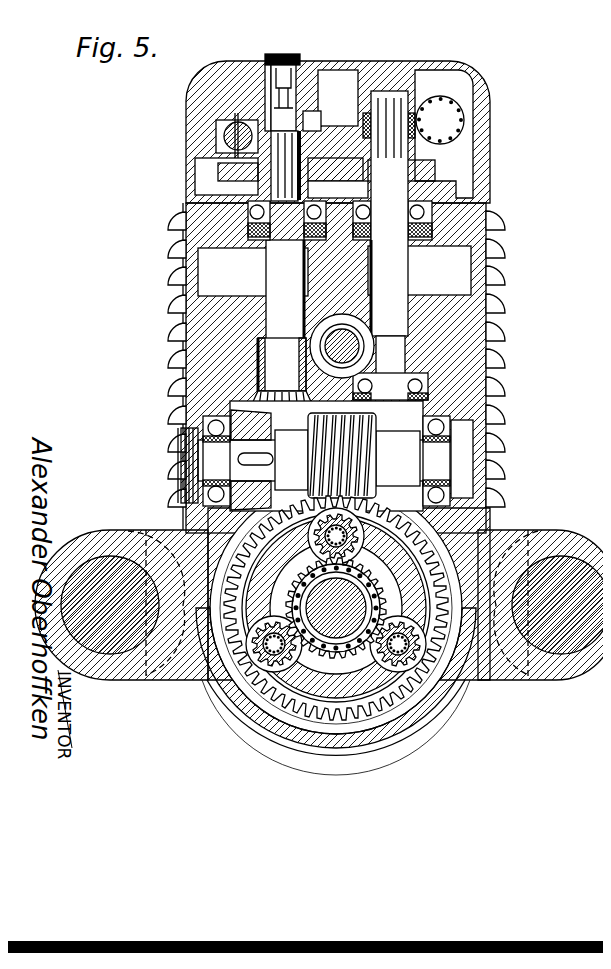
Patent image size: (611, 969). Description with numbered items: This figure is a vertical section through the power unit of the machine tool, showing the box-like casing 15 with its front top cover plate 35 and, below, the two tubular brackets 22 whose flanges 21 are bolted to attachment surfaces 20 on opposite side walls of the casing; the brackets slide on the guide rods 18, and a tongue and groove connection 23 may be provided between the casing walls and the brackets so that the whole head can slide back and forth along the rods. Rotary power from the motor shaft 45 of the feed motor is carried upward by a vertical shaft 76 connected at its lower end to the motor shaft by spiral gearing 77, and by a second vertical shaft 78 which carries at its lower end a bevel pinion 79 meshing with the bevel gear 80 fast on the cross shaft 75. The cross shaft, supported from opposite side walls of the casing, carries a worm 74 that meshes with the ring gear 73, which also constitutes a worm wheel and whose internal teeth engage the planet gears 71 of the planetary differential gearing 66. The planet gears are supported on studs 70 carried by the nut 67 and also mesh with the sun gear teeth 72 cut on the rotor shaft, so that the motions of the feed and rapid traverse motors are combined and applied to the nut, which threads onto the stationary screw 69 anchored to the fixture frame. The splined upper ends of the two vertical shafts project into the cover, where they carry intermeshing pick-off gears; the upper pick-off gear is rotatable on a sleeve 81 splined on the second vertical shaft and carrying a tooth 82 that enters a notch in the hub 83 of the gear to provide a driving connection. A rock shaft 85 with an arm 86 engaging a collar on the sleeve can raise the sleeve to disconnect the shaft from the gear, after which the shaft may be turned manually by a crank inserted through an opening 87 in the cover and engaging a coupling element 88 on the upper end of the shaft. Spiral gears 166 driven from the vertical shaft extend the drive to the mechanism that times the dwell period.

The casing 15 is at (178, 318).
The rods 18 is at (103, 548).
The attachment surfaces 20 is at (143, 563).
The flanges 21 is at (135, 527).
The tubular brackets 22 is at (96, 525).
The tongue and groove connection 23 is at (456, 612).
The front top cover plate 35 is at (482, 134).
The motor shaft 45 is at (339, 346).
The differential gearing 66 is at (431, 553).
The nut 67 is at (336, 608).
The screw 69 is at (336, 608).
The studs 70 is at (240, 655).
The planet gears 71 is at (336, 593).
The sun gear teeth 72 is at (274, 565).
The ring gear 73 is at (378, 512).
The worm 74 is at (366, 426).
The cross shaft 75 is at (393, 432).
The vertical shaft 76 is at (398, 272).
The spiral gearing 77 is at (354, 326).
The second vertical shaft 78 is at (296, 281).
The bevel pinion 79 is at (420, 161).
The bevel gear 80 is at (322, 160).
The sleeve 81 is at (340, 199).
The tooth 82 is at (312, 146).
The hub 83 is at (226, 176).
The rock shaft 85 is at (222, 118).
The arm 86 is at (236, 116).
The opening 87 is at (257, 64).
The coupling element 88 is at (257, 82).
The spiral gears 166 is at (425, 95).